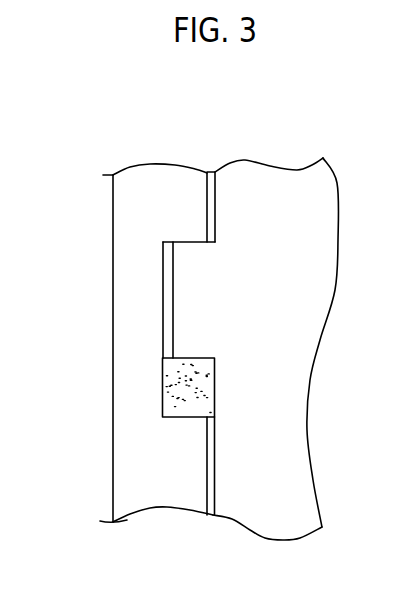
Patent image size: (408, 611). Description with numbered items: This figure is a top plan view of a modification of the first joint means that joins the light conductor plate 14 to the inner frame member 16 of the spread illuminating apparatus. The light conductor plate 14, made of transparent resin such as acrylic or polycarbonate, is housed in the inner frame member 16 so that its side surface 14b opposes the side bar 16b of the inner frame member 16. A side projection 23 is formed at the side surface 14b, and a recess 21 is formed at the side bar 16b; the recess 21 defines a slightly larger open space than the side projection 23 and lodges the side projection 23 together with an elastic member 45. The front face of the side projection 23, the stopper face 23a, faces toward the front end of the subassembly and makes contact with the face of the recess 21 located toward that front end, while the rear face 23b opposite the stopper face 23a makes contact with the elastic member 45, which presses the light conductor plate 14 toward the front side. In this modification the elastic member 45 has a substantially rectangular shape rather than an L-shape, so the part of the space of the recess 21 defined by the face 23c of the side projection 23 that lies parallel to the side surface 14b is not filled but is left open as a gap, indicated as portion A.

The portion A is at (168, 248).
The light conductor plate 14 is at (262, 522).
The side surface 14b is at (208, 488).
The inner frame member 16 is at (112, 490).
The side bar 16b is at (142, 505).
The recess 21 is at (162, 277).
The side projection 23 is at (183, 310).
The stopper face 23a is at (190, 240).
The rear face 23b is at (185, 358).
The face of side projection parallel to the side surface 23c is at (163, 338).
The elastic member 45 is at (169, 390).